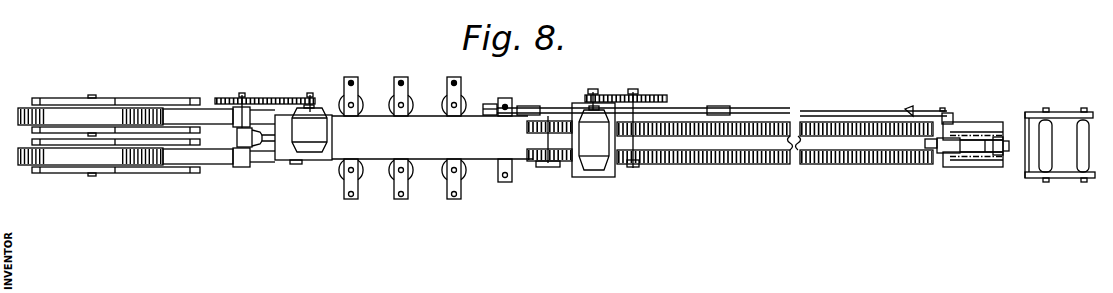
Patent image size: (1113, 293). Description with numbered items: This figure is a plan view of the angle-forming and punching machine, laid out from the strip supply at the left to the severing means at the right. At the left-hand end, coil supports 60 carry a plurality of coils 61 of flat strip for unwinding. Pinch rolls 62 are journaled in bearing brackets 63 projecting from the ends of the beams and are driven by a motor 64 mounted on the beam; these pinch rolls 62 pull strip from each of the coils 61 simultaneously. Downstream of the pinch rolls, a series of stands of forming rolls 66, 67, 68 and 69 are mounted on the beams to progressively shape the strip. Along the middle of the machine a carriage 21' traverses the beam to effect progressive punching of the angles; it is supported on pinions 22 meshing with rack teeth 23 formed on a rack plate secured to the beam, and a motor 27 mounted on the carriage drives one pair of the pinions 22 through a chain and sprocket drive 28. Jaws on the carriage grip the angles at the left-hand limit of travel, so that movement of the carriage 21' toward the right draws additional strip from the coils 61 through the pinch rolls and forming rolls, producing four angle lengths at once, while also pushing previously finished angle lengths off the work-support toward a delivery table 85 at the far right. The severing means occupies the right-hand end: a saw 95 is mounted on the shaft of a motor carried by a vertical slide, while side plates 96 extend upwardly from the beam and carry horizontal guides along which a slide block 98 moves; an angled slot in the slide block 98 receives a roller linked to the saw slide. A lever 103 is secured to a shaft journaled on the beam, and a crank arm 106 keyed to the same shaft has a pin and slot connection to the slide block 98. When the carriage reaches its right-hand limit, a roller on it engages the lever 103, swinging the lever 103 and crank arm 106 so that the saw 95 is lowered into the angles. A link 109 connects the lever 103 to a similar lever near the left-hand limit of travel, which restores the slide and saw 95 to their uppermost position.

The carriage 21' is at (580, 153).
The pinions 22 is at (538, 128).
The rack teeth 23 is at (742, 134).
The motor 27 is at (600, 162).
The chain and sprocket drive 28 is at (613, 98).
The coil supports 60 is at (177, 132).
The coils 61 is at (62, 115).
The pinch rolls 62 is at (240, 118).
The bearing brackets 63 is at (268, 142).
The motor 64 is at (320, 138).
The stand of forming rolls 66 is at (345, 172).
The stand of forming rolls 67 is at (397, 172).
The stand of forming rolls 68 is at (452, 172).
The stand of forming rolls 69 is at (497, 163).
The delivery table 85 is at (1055, 127).
The saw 95 is at (1002, 170).
The side plates 96 is at (977, 161).
The slide block 98 is at (968, 140).
The lever 103 is at (933, 103).
The crank arm 106 is at (912, 143).
The link 109 is at (802, 110).